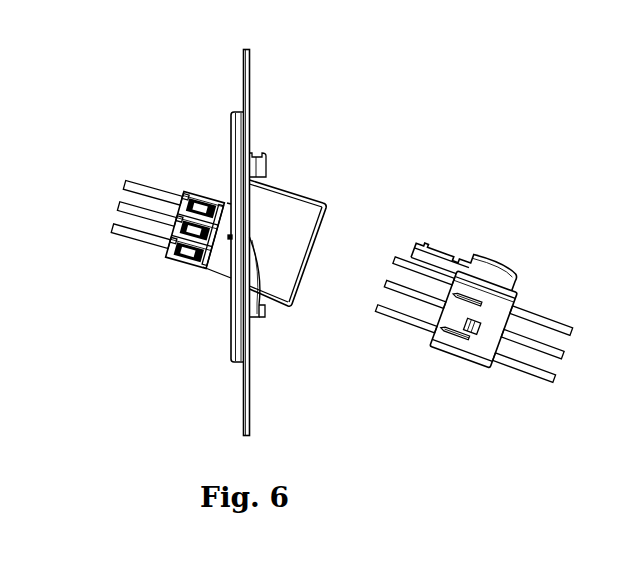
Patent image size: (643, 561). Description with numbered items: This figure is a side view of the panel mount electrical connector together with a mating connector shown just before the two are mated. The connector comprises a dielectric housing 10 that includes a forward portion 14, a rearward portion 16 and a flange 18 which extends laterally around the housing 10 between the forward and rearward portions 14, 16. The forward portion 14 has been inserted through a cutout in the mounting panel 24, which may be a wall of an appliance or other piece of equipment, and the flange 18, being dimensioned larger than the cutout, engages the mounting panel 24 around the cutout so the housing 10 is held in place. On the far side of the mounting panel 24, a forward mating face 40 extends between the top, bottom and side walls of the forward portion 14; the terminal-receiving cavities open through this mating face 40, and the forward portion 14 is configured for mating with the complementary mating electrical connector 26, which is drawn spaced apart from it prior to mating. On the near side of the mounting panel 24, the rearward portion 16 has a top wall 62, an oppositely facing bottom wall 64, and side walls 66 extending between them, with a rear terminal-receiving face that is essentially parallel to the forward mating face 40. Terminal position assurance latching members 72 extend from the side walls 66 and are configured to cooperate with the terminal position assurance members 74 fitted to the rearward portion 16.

The dielectric housing 10 is at (307, 102).
The forward portion 14 is at (310, 185).
The rearward portion 16 is at (212, 168).
The flange 18 is at (230, 343).
The mounting panel 24 is at (249, 73).
The mating electrical connector 26 is at (517, 230).
The forward mating face 40 is at (307, 273).
The top wall 62 is at (207, 187).
The bottom wall 64 is at (167, 303).
The side walls 66 is at (197, 310).
The terminal position assurance latching members 72 is at (143, 280).
The terminal position assurance members 74 is at (170, 247).